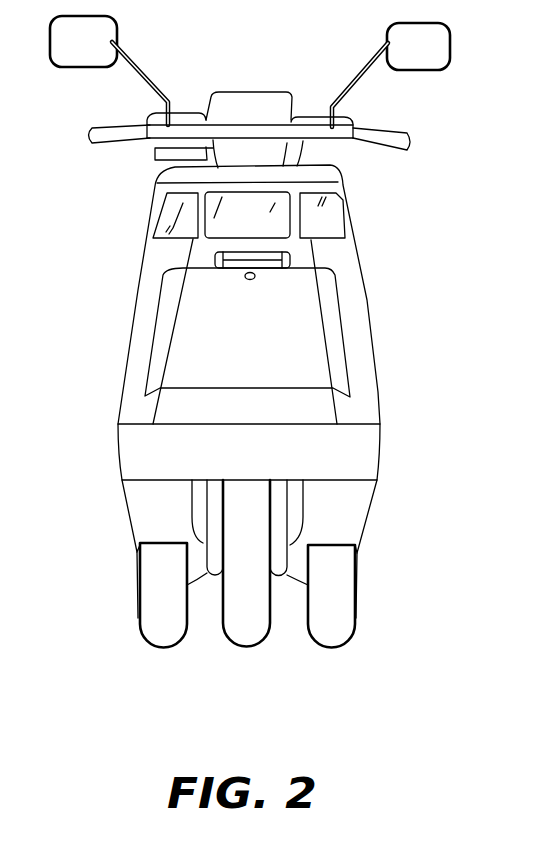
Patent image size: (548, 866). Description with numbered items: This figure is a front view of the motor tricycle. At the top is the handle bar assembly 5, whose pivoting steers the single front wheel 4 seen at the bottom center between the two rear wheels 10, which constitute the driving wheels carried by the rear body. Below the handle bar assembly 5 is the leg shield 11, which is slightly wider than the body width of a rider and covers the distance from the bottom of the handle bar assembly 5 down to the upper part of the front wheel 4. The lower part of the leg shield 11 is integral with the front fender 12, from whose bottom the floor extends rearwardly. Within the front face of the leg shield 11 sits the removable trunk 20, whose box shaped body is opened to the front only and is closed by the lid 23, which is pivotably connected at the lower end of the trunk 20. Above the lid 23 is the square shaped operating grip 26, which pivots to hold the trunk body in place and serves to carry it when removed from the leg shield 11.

The handle bar assembly 5 is at (398, 137).
The leg shield 11 is at (358, 257).
The operating grip 26 is at (259, 246).
The trunk 20 is at (202, 330).
The lid 23 is at (313, 343).
The front fender 12 is at (360, 453).
The rear wheels 10 is at (150, 628).
The front wheel 4 is at (247, 637).